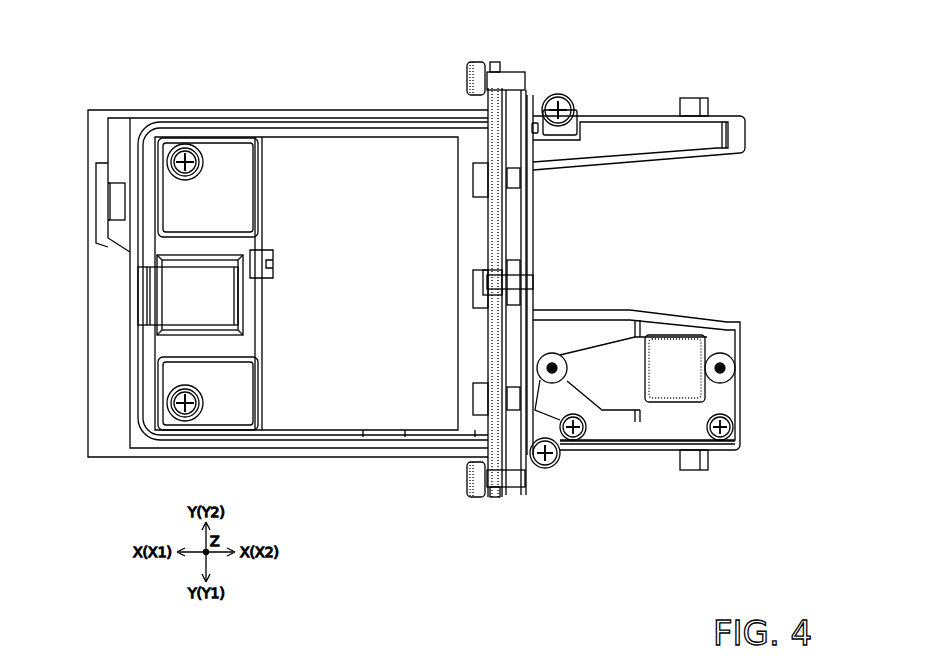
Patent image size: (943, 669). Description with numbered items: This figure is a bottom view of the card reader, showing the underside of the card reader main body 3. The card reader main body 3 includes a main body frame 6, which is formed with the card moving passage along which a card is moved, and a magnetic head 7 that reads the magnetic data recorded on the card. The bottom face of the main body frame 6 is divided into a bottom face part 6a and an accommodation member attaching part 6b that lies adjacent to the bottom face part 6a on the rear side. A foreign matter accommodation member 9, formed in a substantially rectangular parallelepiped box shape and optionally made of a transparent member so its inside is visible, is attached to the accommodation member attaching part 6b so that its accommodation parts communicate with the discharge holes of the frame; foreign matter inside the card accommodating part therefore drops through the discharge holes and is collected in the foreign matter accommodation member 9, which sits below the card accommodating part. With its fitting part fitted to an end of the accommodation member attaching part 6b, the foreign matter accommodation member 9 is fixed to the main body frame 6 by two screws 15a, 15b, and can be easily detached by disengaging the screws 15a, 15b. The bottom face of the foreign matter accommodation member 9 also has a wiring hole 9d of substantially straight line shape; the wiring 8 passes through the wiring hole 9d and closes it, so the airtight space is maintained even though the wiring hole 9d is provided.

The card reader main body 3 is at (552, 72).
The main body frame 6 is at (602, 453).
The bottom face part 6a is at (385, 412).
The accommodation member attaching part 6b is at (257, 436).
The magnetic head 7 is at (671, 378).
The wiring 8 is at (183, 295).
The foreign matter accommodation member 9 is at (224, 158).
The wiring hole 9d is at (233, 325).
The screw 15a is at (187, 150).
The screw 15b is at (187, 415).